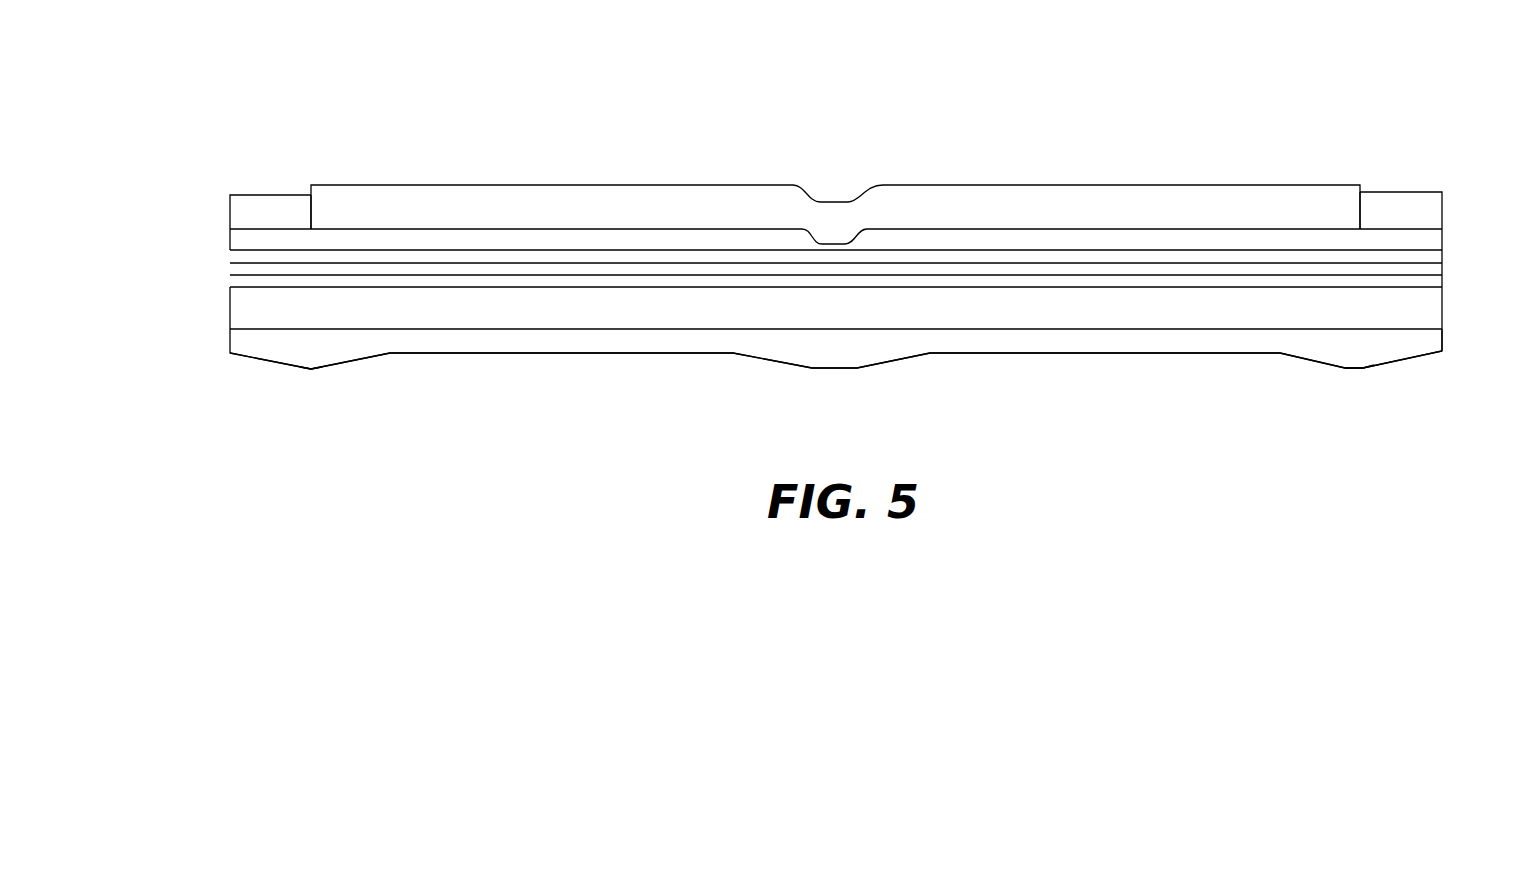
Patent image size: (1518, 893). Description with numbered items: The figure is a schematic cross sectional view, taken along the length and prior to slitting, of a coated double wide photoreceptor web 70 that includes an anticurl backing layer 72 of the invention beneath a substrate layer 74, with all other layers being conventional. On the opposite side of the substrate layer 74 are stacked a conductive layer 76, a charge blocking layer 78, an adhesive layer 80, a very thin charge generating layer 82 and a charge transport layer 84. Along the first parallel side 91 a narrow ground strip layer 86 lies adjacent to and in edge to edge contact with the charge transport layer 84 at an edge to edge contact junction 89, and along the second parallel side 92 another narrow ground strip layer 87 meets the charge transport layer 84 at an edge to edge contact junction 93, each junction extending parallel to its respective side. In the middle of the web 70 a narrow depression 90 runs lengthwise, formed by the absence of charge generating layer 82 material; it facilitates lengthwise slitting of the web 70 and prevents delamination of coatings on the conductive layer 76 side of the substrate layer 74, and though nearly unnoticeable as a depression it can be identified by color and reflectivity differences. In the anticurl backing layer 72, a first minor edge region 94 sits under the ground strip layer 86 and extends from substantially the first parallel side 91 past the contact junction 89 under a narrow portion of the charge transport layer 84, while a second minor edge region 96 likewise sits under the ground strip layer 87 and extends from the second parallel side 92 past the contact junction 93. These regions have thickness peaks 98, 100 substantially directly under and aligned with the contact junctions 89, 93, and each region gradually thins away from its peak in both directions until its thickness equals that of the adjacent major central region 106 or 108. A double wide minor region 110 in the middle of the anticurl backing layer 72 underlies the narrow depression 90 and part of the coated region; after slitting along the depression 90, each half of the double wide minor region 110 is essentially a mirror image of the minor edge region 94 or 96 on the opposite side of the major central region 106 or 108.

The double wide photoreceptor web 70 is at (980, 118).
The anticurl backing layer 72 is at (226, 358).
The substrate layer 74 is at (230, 292).
The conductive layer 76 is at (230, 277).
The charge blocking layer 78 is at (230, 267).
The adhesive layer 80 is at (230, 253).
The charge generating layer 82 is at (230, 241).
The charge transport layer 84 is at (547, 195).
The ground strip layer 86 is at (287, 195).
The ground strip layer 87 is at (1387, 192).
The edge to edge contact junction 89 is at (312, 207).
The narrow depression 90 is at (837, 202).
The first parallel side 91 is at (225, 305).
The second parallel side 92 is at (1447, 258).
The edge to edge contact junction 93 is at (1360, 207).
The first minor edge region 94 is at (313, 350).
The second minor edge region 96 is at (1360, 348).
The thickness peak 98 is at (310, 368).
The thickness peak 100 is at (1362, 367).
The major central region 106 is at (592, 353).
The major central region 108 is at (1080, 352).
The double wide minor region 110 is at (832, 353).